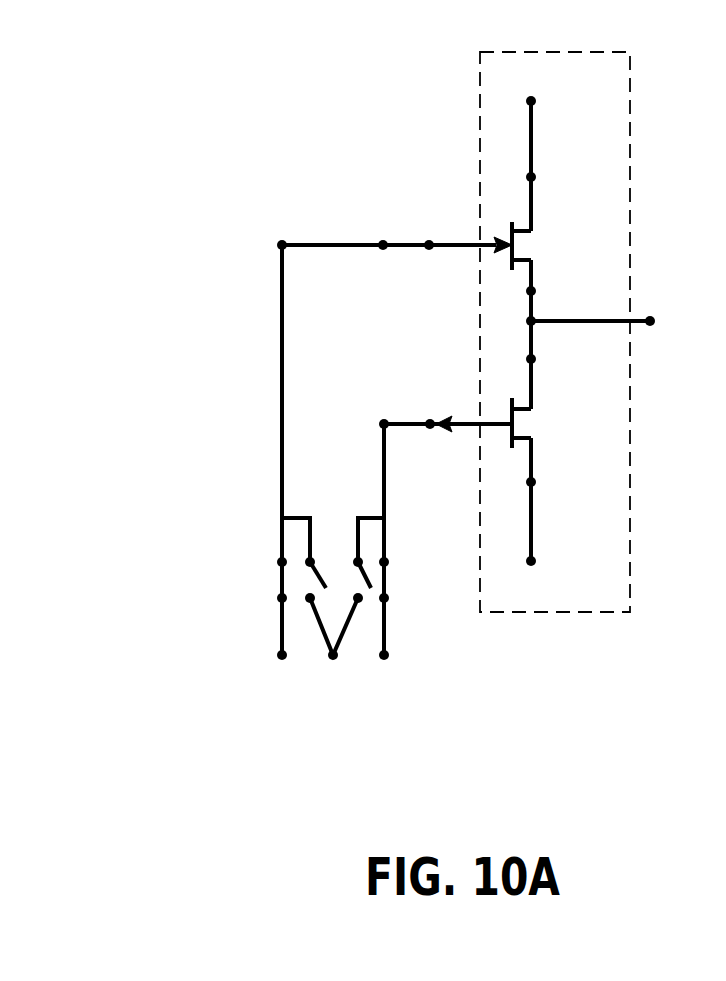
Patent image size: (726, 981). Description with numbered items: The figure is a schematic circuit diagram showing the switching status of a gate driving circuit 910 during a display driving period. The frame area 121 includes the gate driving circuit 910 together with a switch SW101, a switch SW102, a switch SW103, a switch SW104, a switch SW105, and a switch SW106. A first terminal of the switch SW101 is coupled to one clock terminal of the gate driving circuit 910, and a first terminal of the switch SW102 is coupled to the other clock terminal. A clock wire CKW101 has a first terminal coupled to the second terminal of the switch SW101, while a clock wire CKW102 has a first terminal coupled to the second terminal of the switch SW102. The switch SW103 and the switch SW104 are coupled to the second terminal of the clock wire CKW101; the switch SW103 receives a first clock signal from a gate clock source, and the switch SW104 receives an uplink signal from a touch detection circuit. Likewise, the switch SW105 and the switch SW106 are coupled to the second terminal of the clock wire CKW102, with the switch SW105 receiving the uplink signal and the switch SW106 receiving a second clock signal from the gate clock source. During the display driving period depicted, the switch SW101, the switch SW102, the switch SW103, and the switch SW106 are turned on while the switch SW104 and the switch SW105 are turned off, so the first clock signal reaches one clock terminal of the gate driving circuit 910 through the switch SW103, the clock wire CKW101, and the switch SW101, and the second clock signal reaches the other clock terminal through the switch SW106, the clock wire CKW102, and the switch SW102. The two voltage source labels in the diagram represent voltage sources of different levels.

The gate driving circuit 910 is at (555, 612).
The frame area 121 is at (437, 715).
The clock wire CKW101 is at (282, 317).
The clock wire CKW102 is at (383, 450).
The switch SW101 is at (407, 242).
The switch SW102 is at (408, 422).
The switch SW103 is at (282, 580).
The switch SW104 is at (320, 575).
The switch SW105 is at (365, 580).
The switch SW106 is at (387, 583).